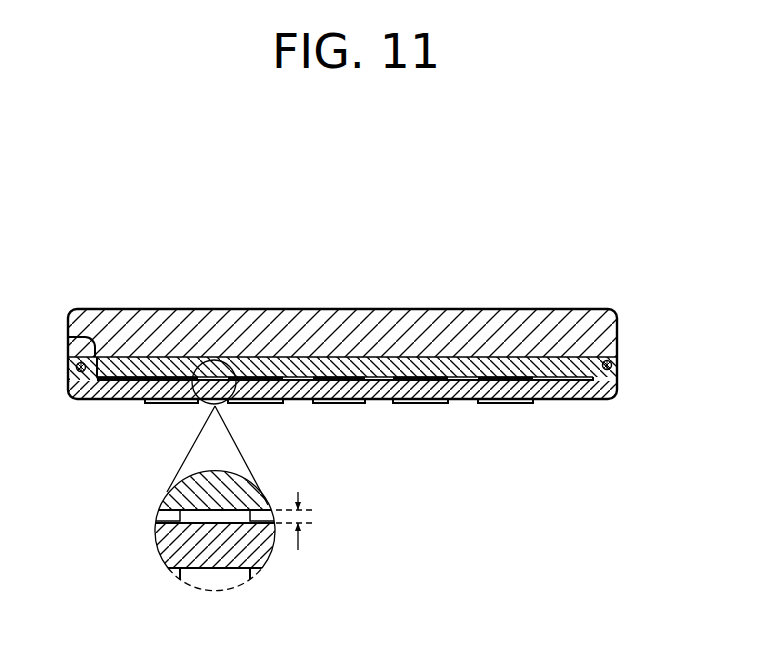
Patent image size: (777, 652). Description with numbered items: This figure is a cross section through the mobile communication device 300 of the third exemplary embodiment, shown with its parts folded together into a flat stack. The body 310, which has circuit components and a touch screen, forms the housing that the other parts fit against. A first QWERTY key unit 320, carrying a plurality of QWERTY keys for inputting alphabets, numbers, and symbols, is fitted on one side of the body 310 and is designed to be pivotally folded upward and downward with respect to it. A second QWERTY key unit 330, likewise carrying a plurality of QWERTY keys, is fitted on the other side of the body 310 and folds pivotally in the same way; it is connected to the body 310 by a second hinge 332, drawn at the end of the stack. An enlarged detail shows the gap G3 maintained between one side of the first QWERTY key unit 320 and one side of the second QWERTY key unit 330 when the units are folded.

The mobile communication device 300 is at (473, 249).
The body 310 is at (602, 330).
The first QWERTY key unit 320 is at (577, 368).
The second QWERTY key unit 330 is at (457, 384).
The second hinge 332 is at (612, 365).
The gap G3 is at (296, 508).